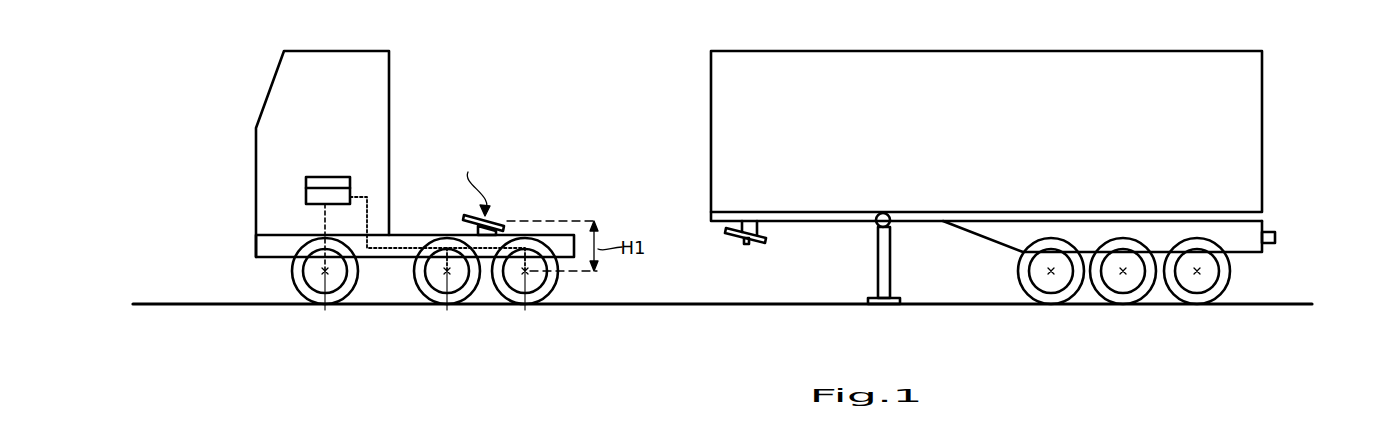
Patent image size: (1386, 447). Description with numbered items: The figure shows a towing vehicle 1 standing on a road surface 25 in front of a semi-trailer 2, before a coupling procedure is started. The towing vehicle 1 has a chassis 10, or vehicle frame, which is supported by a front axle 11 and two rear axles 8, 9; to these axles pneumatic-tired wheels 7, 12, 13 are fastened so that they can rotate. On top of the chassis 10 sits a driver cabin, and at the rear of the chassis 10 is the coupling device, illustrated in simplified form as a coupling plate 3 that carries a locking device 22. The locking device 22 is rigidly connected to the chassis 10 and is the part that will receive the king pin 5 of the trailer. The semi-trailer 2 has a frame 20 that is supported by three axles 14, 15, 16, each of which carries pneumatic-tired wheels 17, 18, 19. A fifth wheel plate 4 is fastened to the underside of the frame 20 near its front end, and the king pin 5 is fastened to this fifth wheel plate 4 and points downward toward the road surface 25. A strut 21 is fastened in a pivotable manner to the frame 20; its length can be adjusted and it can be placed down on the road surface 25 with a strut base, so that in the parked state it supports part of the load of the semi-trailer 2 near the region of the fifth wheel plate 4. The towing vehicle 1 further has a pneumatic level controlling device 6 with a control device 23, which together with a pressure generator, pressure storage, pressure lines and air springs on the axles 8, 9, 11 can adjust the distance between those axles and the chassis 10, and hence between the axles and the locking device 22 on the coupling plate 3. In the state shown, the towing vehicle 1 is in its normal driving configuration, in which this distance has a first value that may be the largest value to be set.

The towing vehicle 1 is at (256, 165).
The semi-trailer 2 is at (1262, 126).
The coupling plate 3 is at (500, 218).
The fifth wheel plate 4 is at (765, 240).
The king pin 5 is at (746, 244).
The pneumatic level controlling device 6 is at (306, 200).
The pneumatic-tired wheel 7 is at (294, 282).
The rear axle 8 is at (447, 310).
The rear axle 9 is at (525, 310).
The chassis 10 is at (410, 235).
The front axle 11 is at (325, 310).
The pneumatic-tired wheel 12 is at (415, 283).
The pneumatic-tired wheel 13 is at (556, 283).
The axle 14 is at (1051, 271).
The axle 15 is at (1123, 271).
The axle 16 is at (1197, 271).
The pneumatic-tired wheel 17 is at (1021, 283).
The pneumatic-tired wheel 18 is at (1098, 284).
The pneumatic-tired wheel 19 is at (1225, 283).
The frame 20 is at (1245, 253).
The strut 21 is at (890, 264).
The locking device 22 is at (474, 180).
The control device 23 is at (340, 177).
The road surface 25 is at (200, 306).